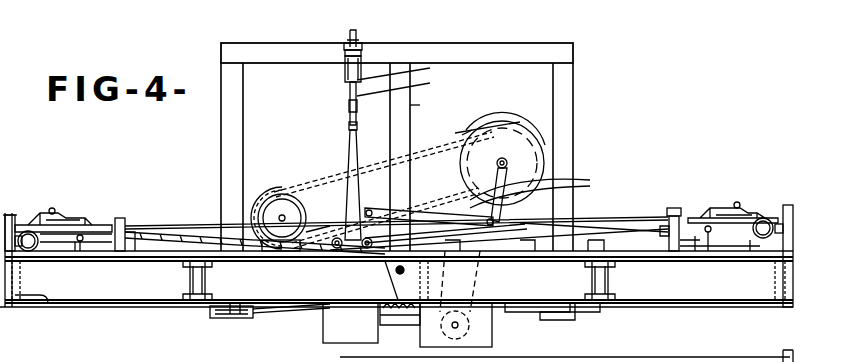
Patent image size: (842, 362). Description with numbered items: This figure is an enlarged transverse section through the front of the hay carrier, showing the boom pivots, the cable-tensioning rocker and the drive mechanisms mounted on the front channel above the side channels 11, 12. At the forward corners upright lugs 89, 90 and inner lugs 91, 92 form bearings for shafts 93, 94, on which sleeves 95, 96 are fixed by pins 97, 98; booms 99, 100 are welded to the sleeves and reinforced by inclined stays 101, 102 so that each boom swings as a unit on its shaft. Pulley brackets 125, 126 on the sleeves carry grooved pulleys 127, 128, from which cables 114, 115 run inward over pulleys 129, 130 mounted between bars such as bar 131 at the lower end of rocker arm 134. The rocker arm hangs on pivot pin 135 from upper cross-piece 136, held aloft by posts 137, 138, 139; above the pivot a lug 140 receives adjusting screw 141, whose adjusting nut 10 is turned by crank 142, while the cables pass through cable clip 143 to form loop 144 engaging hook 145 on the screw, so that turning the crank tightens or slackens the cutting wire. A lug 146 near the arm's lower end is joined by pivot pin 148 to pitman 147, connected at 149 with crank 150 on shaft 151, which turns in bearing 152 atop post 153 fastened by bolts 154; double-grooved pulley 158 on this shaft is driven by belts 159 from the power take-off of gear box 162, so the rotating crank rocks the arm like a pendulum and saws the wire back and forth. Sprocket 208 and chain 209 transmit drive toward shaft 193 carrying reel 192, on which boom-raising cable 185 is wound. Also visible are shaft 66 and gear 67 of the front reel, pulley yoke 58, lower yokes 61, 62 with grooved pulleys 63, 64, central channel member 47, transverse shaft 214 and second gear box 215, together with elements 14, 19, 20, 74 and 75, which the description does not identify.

The adjusting nut 10 is at (362, 47).
The side channel 11 is at (45, 296).
The side channel 12 is at (775, 280).
The base rail 14 is at (785, 354).
The bearing block 19 is at (262, 252).
The cross beam 20 is at (592, 280).
The central channel member 47 is at (385, 282).
The pulley yoke 58 is at (604, 241).
The pulley yoke 61 is at (233, 314).
The pulley yoke 62 is at (590, 313).
The grooved pulley 63 is at (225, 318).
The grooved pulley 64 is at (565, 320).
The shaft 66 is at (410, 278).
The gear 67 is at (446, 230).
The push rod 74 is at (285, 312).
The mounting plate 75 is at (530, 312).
The upright lug 89 is at (788, 205).
The upright lug 90 is at (10, 215).
The lug 91 is at (680, 208).
The lug 92 is at (120, 218).
The shaft 93 is at (130, 234).
The shaft 94 is at (647, 238).
The sleeve 95 is at (95, 252).
The sleeve 96 is at (685, 254).
The pin 97 is at (80, 254).
The pin 98 is at (707, 254).
The boom 99 is at (755, 254).
The boom 100 is at (34, 250).
The inclined stay or brace 101 is at (690, 247).
The inclined stay or brace 102 is at (110, 252).
The cable 114 is at (216, 223).
The cable 115 is at (672, 213).
The pulley bracket 125 is at (45, 223).
The pulley bracket 126 is at (720, 212).
The grooved pulley 127 is at (755, 218).
The grooved pulley 128 is at (62, 214).
The pulley 129 is at (328, 220).
The pulley 130 is at (366, 252).
The bar 131 is at (340, 252).
The rocker arm 134 is at (349, 110).
The pivot pin 135 is at (361, 52).
The upper cross-piece 136 is at (480, 45).
The post 137 is at (243, 92).
The post 138 is at (433, 102).
The post 139 is at (573, 115).
The rearwardly-extending lug 140 is at (345, 52).
The vertical adjusting screw 141 is at (350, 74).
The crank 142 is at (353, 30).
The cable clip 143 is at (349, 126).
The loop 144 is at (412, 85).
The hook 145 is at (412, 70).
The lug 146 is at (368, 176).
The link or pitman 147 is at (386, 212).
The pivot pin 148 is at (392, 210).
The pitman connection 149 is at (460, 281).
The crank 150 is at (502, 163).
The shaft 151 is at (520, 165).
The bearing 152 is at (478, 124).
The post 153 is at (560, 183).
The bolts 154 is at (496, 265).
The double-grooved pulley 158 is at (518, 118).
The belts 159 is at (560, 200).
The gear box 162 is at (492, 337).
The cable 185 is at (575, 218).
The reel 192 is at (280, 200).
The shaft 193 is at (282, 218).
The sprocket 208 is at (305, 185).
The chain 209 is at (440, 142).
The transverse shaft 214 is at (400, 331).
The second gear box 215 is at (340, 337).